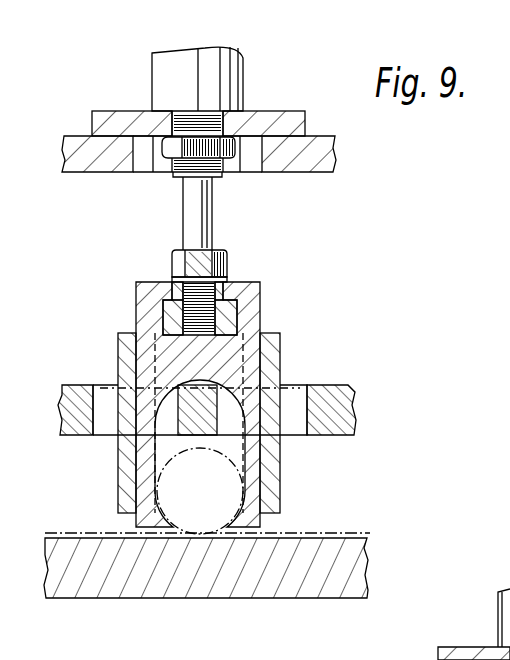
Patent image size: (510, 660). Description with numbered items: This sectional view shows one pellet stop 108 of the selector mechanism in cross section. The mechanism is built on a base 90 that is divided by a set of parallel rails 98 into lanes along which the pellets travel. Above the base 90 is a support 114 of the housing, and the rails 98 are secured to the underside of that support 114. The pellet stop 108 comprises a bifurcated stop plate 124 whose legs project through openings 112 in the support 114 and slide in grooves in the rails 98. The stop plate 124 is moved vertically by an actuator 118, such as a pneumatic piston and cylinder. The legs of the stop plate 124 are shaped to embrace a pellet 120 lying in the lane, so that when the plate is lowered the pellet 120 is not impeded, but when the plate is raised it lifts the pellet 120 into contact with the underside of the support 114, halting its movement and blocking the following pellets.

The base 90 is at (110, 592).
The rails 98 is at (125, 334).
The pellet stop 108 is at (302, 275).
The openings 112 is at (100, 385).
The support 114 is at (333, 405).
The actuator 118 is at (228, 77).
The pellet 120 is at (240, 467).
The stop plates 124 is at (143, 432).